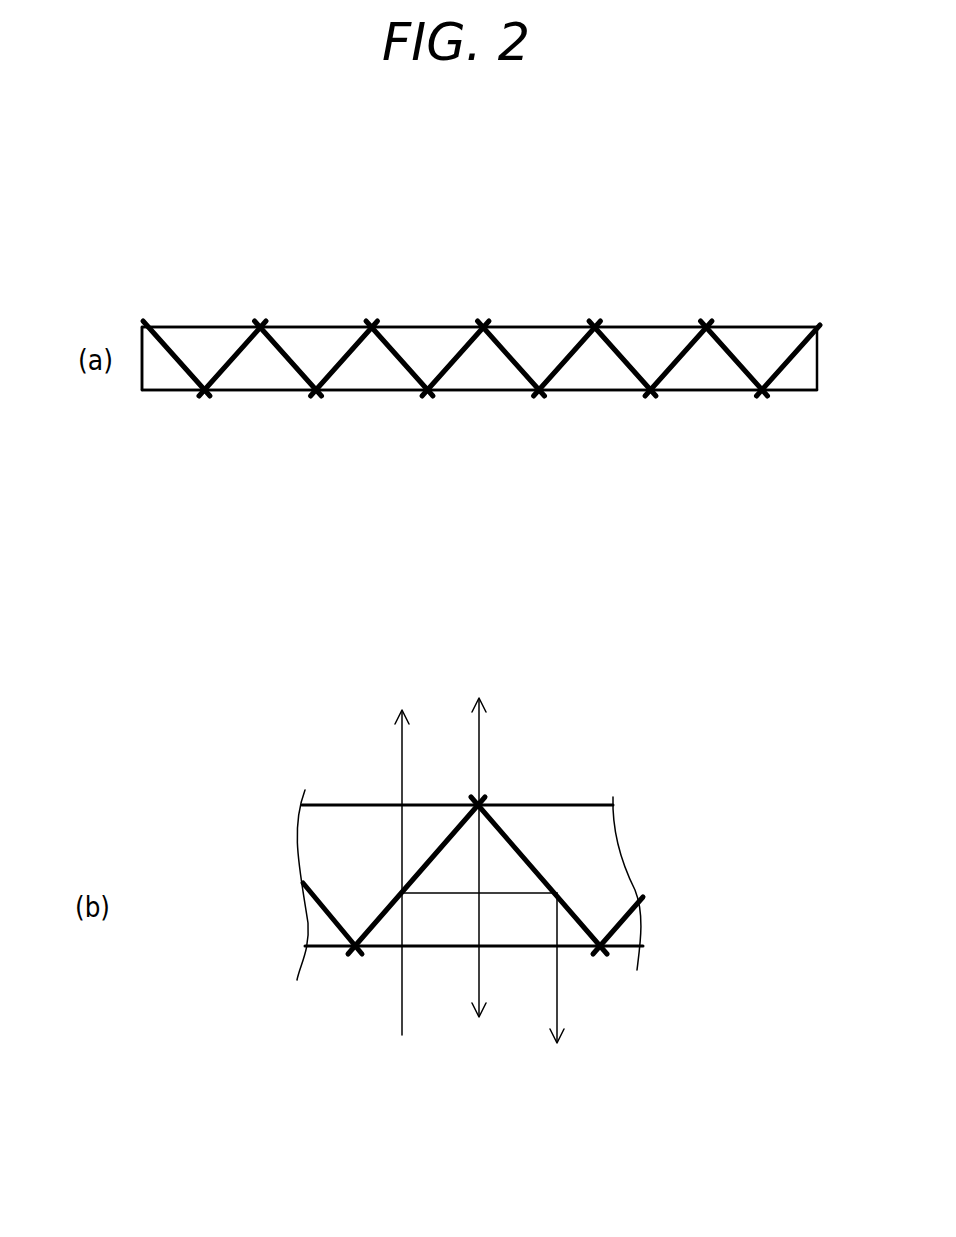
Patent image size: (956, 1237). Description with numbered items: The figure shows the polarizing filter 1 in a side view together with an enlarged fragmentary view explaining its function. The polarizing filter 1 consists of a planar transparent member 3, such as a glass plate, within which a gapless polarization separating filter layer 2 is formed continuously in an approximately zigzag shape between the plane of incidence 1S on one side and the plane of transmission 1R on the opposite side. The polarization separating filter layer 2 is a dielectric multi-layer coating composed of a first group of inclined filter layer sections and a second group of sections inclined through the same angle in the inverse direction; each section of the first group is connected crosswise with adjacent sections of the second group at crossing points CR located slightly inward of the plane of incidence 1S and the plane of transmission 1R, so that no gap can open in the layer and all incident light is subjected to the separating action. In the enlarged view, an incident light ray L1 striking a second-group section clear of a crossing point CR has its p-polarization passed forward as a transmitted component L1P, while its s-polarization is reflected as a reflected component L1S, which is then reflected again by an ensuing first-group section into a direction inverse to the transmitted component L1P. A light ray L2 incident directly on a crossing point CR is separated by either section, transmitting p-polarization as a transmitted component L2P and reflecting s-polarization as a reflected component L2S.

The polarizing filter 1 is at (457, 320).
The plane of transmission 1R is at (640, 326).
The plane of incidence 1S is at (700, 391).
The polarization separating filter layer 2 is at (456, 315).
The transparent member 3 is at (158, 385).
The crossing point CR is at (205, 392).
The incident light ray L1 is at (393, 889).
The light ray incident on a crossing point L2 is at (470, 877).
The transmitted component L1P is at (403, 704).
The reflected component L1S is at (500, 987).
The transmitted component L2P is at (490, 689).
The reflected component L2S is at (506, 999).